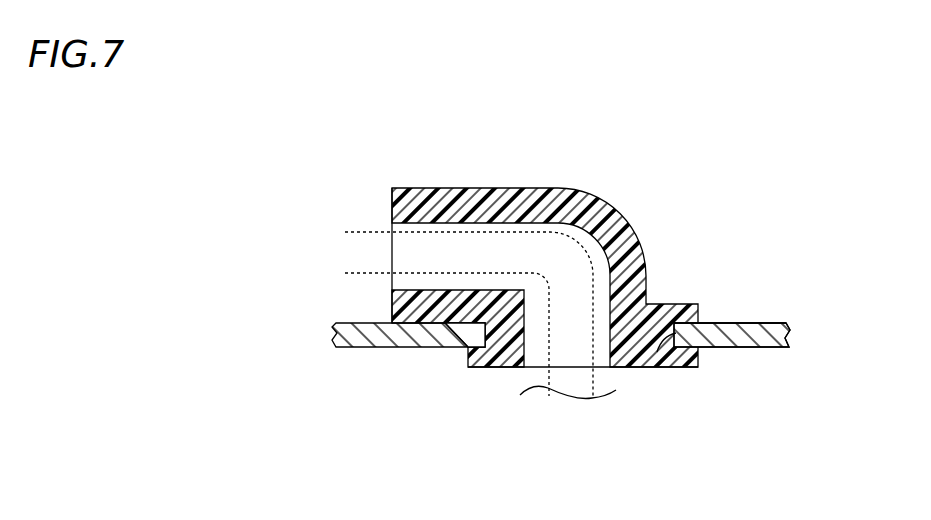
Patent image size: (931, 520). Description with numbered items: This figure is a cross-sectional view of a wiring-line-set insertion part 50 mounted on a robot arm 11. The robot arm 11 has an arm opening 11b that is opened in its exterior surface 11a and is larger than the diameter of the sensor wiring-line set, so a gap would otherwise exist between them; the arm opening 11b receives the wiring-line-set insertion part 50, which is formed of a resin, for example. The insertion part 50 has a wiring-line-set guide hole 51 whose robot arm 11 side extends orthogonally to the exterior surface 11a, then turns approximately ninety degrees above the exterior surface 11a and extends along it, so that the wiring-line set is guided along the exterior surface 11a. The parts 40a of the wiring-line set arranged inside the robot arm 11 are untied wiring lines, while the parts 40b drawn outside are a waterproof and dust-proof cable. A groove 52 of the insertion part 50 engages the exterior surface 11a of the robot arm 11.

The wiring-line-set insertion part 50 is at (475, 188).
The wiring-line-set guide hole 51 is at (392, 224).
The groove 52 is at (472, 343).
The robot arm 11 is at (750, 350).
The exterior surface 11a is at (753, 322).
The arm opening 11b is at (657, 367).
The parts of the sensor wiring-line set arranged inside the robot arm 40a is at (565, 394).
The parts of the sensor wiring-line set drawn to the outside of the robot arm 40b is at (340, 300).